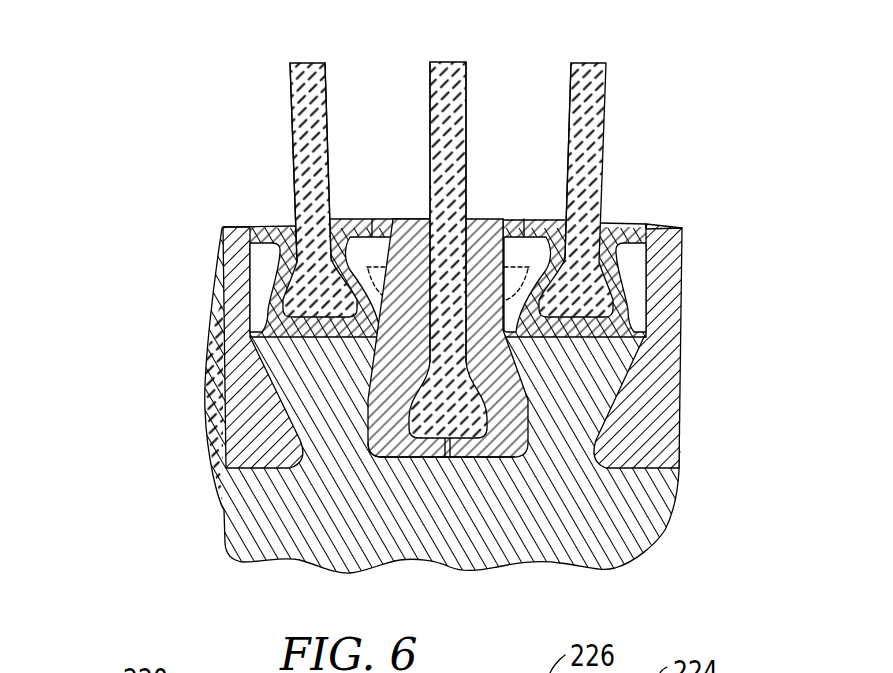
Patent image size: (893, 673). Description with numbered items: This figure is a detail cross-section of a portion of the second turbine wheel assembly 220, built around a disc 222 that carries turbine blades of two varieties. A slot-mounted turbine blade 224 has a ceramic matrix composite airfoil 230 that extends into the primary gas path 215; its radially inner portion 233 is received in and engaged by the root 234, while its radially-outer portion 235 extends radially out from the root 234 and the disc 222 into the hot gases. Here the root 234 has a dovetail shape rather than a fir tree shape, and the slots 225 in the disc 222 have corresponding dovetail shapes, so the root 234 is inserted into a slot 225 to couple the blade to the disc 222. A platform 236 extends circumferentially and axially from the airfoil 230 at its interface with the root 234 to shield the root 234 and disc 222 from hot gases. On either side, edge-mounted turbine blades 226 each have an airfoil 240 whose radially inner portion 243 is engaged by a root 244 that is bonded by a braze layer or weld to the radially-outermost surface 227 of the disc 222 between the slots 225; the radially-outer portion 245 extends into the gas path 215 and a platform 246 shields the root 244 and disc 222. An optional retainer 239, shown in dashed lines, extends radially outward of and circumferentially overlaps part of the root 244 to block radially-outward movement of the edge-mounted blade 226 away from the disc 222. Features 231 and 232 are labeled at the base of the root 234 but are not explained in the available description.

The primary gas path 215 is at (275, 111).
The second turbine wheel assembly 220 is at (138, 92).
The disc 222 is at (656, 542).
The slot-mounted turbine blade 224 is at (480, 50).
The slot 225 is at (402, 455).
The edge-mounted turbine blade 226 is at (345, 50).
The radially-outermost surface 227 is at (254, 337).
The airfoil 230 is at (479, 79).
The bottom corner of spacer region 231 is at (405, 470).
The bottom surface portion 232 is at (491, 471).
The radially inner portion 233 is at (477, 362).
The root 234 is at (418, 470).
The radially-outer portion 235 is at (457, 118).
The platform 236 is at (487, 206).
The retainer 239 is at (512, 251).
The airfoil 240 is at (340, 137).
The radially inner portion 243 is at (275, 265).
The root 244 is at (297, 345).
The radially-outer portion 245 is at (278, 165).
The platform 246 is at (346, 207).